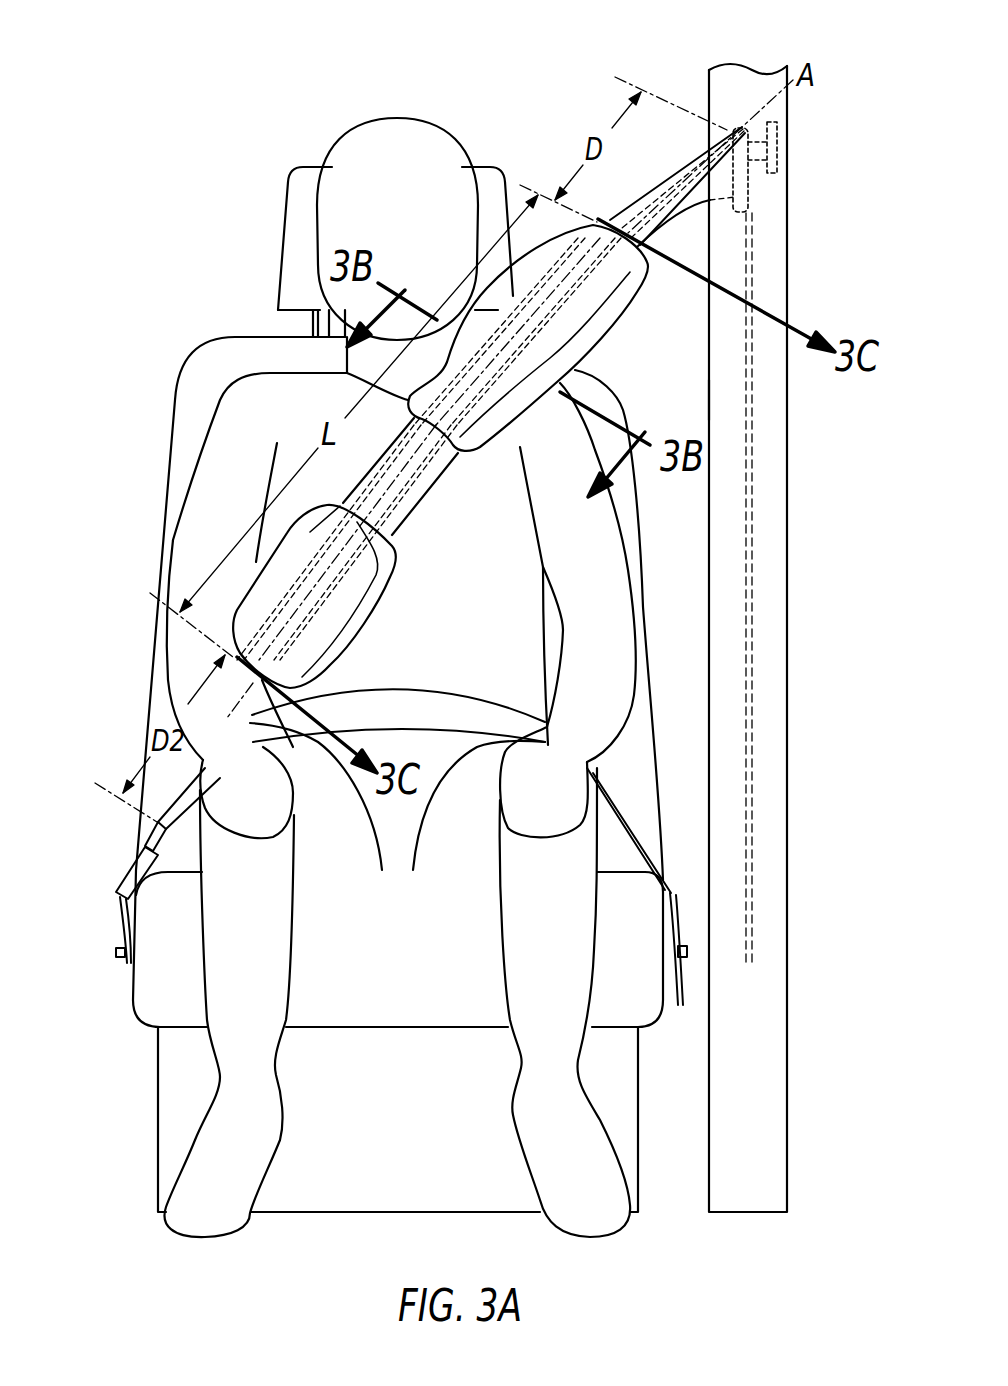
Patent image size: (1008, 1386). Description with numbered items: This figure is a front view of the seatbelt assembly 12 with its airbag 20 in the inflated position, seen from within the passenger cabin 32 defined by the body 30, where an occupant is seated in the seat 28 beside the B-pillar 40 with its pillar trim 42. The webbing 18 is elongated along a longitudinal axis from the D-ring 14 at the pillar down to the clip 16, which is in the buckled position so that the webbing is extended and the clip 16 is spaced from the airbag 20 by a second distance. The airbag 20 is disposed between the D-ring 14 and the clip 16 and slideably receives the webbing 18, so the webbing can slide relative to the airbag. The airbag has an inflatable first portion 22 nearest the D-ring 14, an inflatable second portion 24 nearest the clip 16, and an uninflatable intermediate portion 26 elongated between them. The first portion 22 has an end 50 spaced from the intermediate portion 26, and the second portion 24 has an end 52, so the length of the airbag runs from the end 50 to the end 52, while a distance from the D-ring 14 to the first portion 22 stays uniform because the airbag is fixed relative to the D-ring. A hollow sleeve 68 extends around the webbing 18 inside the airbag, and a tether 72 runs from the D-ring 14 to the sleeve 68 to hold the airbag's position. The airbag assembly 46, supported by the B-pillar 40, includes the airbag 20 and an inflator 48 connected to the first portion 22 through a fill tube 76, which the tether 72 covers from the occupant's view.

The seatbelt assembly 12 is at (568, 80).
The D-ring 14 is at (750, 185).
The clip 16 is at (150, 833).
The webbing 18 is at (663, 227).
The airbag 20 is at (643, 287).
The first portion 22 is at (622, 320).
The second portion 24 is at (338, 647).
The intermediate portion 26 is at (418, 503).
The seat 28 is at (226, 331).
The body 30 is at (789, 462).
The passenger cabin 32 is at (88, 155).
The B-pillar 40 is at (788, 407).
The pillar trim 42 is at (708, 392).
The airbag assembly 46 is at (684, 85).
The inflator 48 is at (778, 157).
The end 50 is at (608, 220).
The end 52 is at (262, 682).
The sleeve 68 is at (357, 563).
The tether 72 is at (652, 186).
The fill tube 76 is at (641, 203).